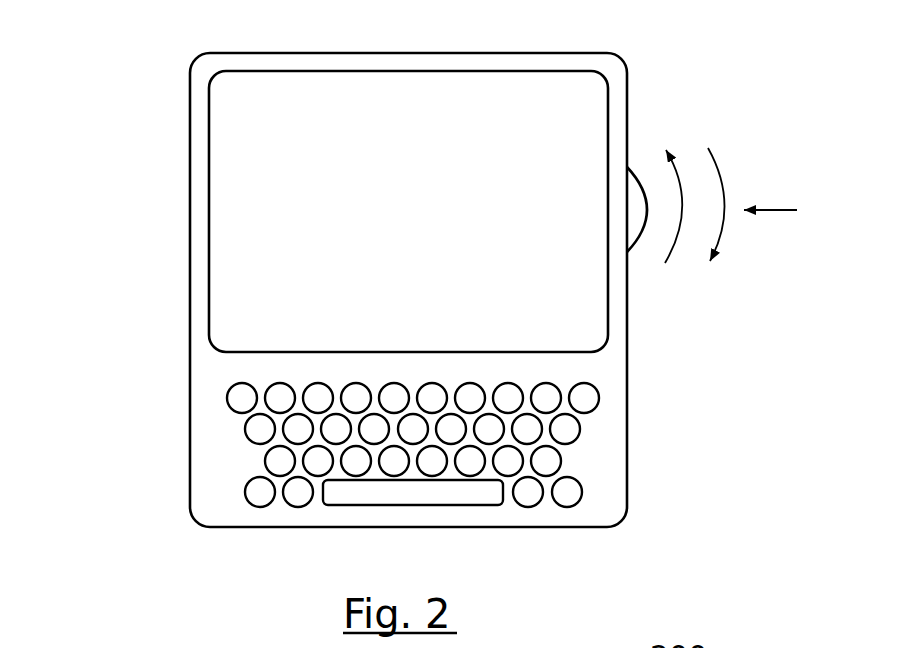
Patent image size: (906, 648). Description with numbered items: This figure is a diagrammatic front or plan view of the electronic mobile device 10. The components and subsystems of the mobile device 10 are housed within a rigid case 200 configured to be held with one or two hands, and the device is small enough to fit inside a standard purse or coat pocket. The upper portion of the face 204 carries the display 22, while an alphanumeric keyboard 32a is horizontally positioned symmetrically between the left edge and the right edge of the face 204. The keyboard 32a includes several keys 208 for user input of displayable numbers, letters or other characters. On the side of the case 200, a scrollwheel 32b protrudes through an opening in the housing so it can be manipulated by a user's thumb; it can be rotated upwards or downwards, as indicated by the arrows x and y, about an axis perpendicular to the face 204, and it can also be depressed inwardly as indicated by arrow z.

The mobile device 10 is at (186, 41).
The rigid case 200 is at (190, 183).
The display 22 is at (273, 309).
The face 204 is at (351, 431).
The keys 208 is at (280, 391).
The alphanumeric keyboard 32a is at (585, 466).
The scrollwheel 32b is at (628, 252).